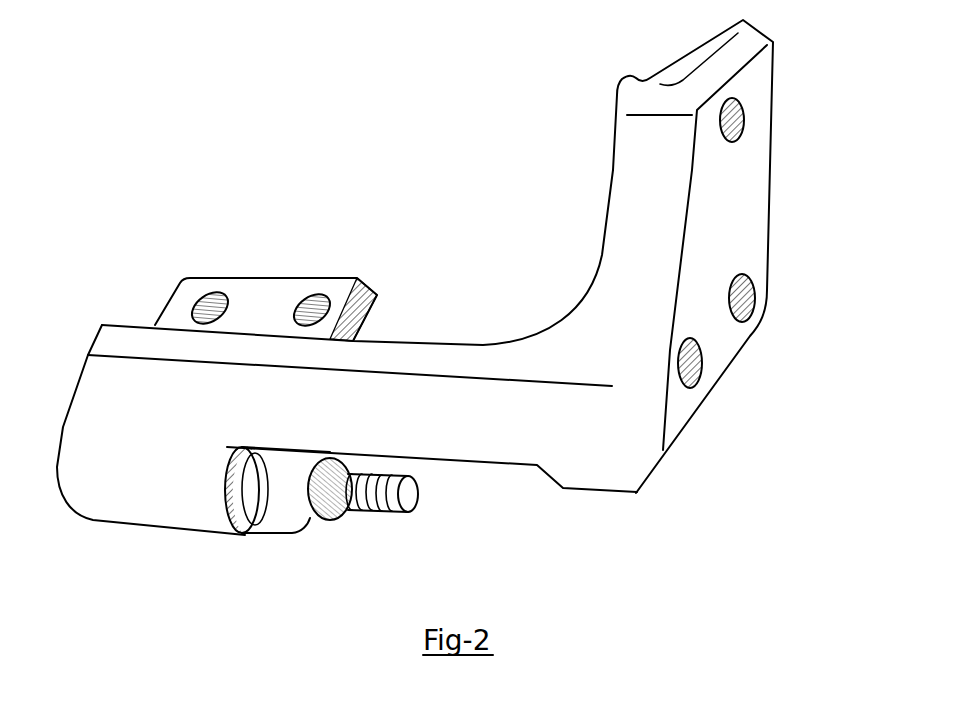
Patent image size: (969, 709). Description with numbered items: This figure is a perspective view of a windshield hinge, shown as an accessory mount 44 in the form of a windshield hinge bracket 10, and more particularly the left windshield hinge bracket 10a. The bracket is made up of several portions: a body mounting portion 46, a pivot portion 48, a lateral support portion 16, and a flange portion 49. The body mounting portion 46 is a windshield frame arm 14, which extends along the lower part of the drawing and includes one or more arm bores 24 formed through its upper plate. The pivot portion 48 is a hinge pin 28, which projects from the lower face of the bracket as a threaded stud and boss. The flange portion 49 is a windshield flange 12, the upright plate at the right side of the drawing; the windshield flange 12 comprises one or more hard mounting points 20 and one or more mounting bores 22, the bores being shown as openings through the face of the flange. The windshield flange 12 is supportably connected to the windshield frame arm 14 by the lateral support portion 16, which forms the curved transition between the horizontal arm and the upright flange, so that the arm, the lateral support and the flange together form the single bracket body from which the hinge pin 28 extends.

The windshield hinge bracket 10 is at (485, 291).
The left windshield hinge bracket 10a is at (485, 291).
The accessory mount 44 is at (323, 184).
The windshield flange 12 is at (763, 256).
The flange portion 49 is at (788, 246).
The windshield frame arm 14 is at (291, 287).
The body mounting portion 46 is at (257, 308).
The lateral support portion 16 is at (408, 397).
The hard mounting point 20 is at (733, 217).
The mounting bore 22 is at (735, 115).
The arm bore 24 is at (308, 297).
The hinge pin 28 is at (353, 504).
The pivot portion 48 is at (370, 500).